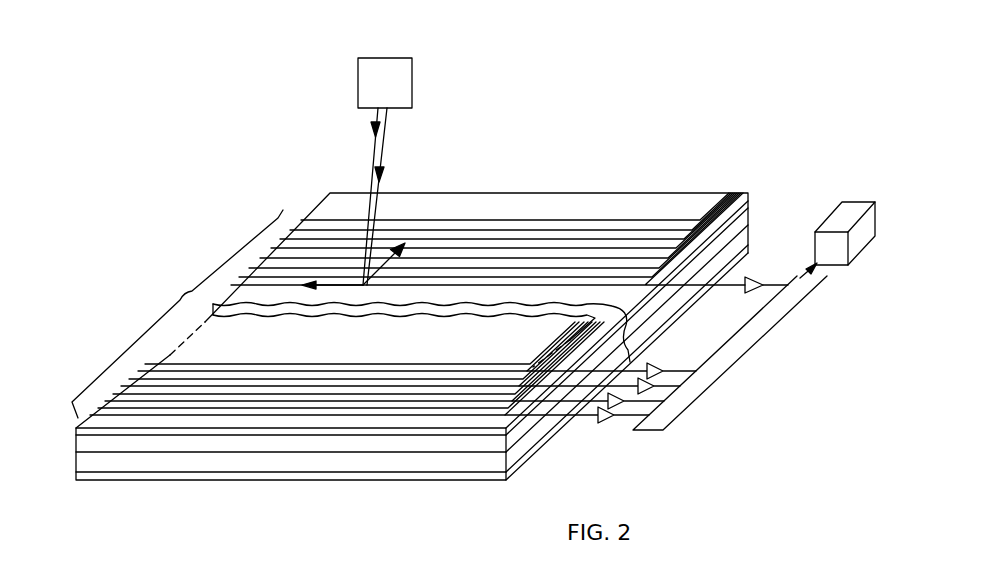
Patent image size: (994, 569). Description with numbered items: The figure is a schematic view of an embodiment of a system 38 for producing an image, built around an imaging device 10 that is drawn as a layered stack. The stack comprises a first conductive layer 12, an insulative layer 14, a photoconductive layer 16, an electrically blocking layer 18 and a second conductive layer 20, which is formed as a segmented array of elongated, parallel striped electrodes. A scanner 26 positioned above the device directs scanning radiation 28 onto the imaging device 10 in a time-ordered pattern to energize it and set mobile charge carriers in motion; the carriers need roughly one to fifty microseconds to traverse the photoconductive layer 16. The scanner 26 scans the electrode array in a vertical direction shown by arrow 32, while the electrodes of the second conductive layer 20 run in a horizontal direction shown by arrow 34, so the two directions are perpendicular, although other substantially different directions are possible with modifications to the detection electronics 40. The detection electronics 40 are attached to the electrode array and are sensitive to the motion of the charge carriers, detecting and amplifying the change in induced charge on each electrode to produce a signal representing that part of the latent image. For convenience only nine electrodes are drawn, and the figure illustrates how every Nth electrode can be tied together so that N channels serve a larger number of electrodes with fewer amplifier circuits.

The imaging device 10 is at (67, 432).
The first conductive layer 12 is at (338, 483).
The insulative layer 14 is at (448, 470).
The photoconductive layer 16 is at (743, 221).
The electrically blocking layer 18 is at (748, 194).
The second conductive layer 20 is at (177, 314).
The scanner 26 is at (412, 68).
The scanning radiation 28 is at (383, 160).
The arrow 32 is at (378, 268).
The arrow 34 is at (334, 288).
The system 38 is at (738, 33).
The detection electronics 40 is at (848, 202).